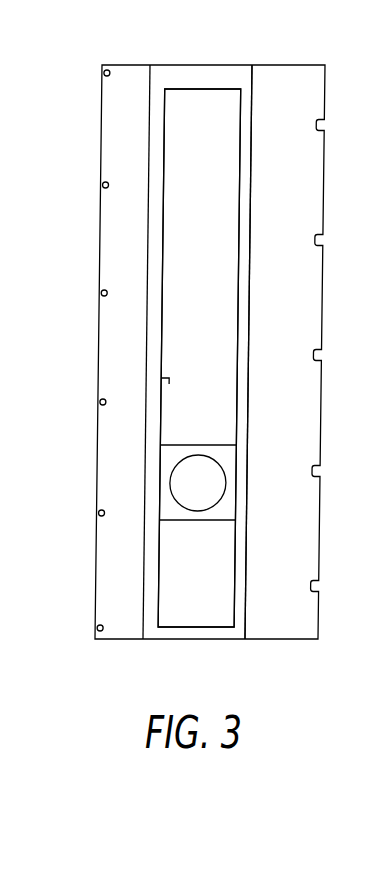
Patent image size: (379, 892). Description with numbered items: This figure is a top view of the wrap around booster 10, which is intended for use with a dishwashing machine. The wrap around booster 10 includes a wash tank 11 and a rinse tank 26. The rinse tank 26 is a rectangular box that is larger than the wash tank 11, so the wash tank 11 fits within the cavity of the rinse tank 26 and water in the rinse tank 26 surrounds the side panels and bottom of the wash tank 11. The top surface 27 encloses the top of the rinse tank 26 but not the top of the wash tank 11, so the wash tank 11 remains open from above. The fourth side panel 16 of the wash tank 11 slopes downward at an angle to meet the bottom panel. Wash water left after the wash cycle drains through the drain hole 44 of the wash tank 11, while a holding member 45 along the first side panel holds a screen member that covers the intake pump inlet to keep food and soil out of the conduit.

The wrap around booster 10 is at (84, 231).
The wash tank 11 is at (224, 228).
The fourth side panel 16 is at (210, 139).
The rinse tank 26 is at (245, 318).
The top surface 27 is at (183, 75).
The drain hole 44 is at (222, 488).
The holding member 45 is at (166, 377).